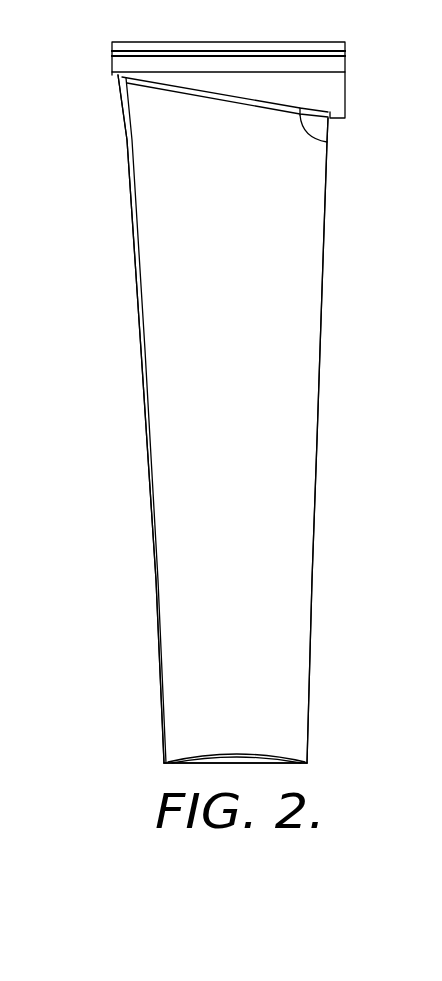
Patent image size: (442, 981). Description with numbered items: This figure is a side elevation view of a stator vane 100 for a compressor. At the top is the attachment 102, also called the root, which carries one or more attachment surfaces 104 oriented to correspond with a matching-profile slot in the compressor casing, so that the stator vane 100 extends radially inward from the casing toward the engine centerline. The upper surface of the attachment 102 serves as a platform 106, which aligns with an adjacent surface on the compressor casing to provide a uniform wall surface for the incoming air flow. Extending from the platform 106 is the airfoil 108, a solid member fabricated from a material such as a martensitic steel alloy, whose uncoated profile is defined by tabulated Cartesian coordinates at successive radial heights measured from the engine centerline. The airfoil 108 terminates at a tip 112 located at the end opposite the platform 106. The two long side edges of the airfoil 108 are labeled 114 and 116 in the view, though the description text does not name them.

The beverage sleeve assembly 100 is at (72, 178).
The cap 102 is at (345, 74).
The cap band 104 is at (112, 62).
The cap skirt 106 is at (298, 116).
The sleeve body 108 is at (310, 320).
The bottom 112 is at (283, 763).
The left side wall 114 is at (141, 346).
The right side wall 116 is at (318, 427).